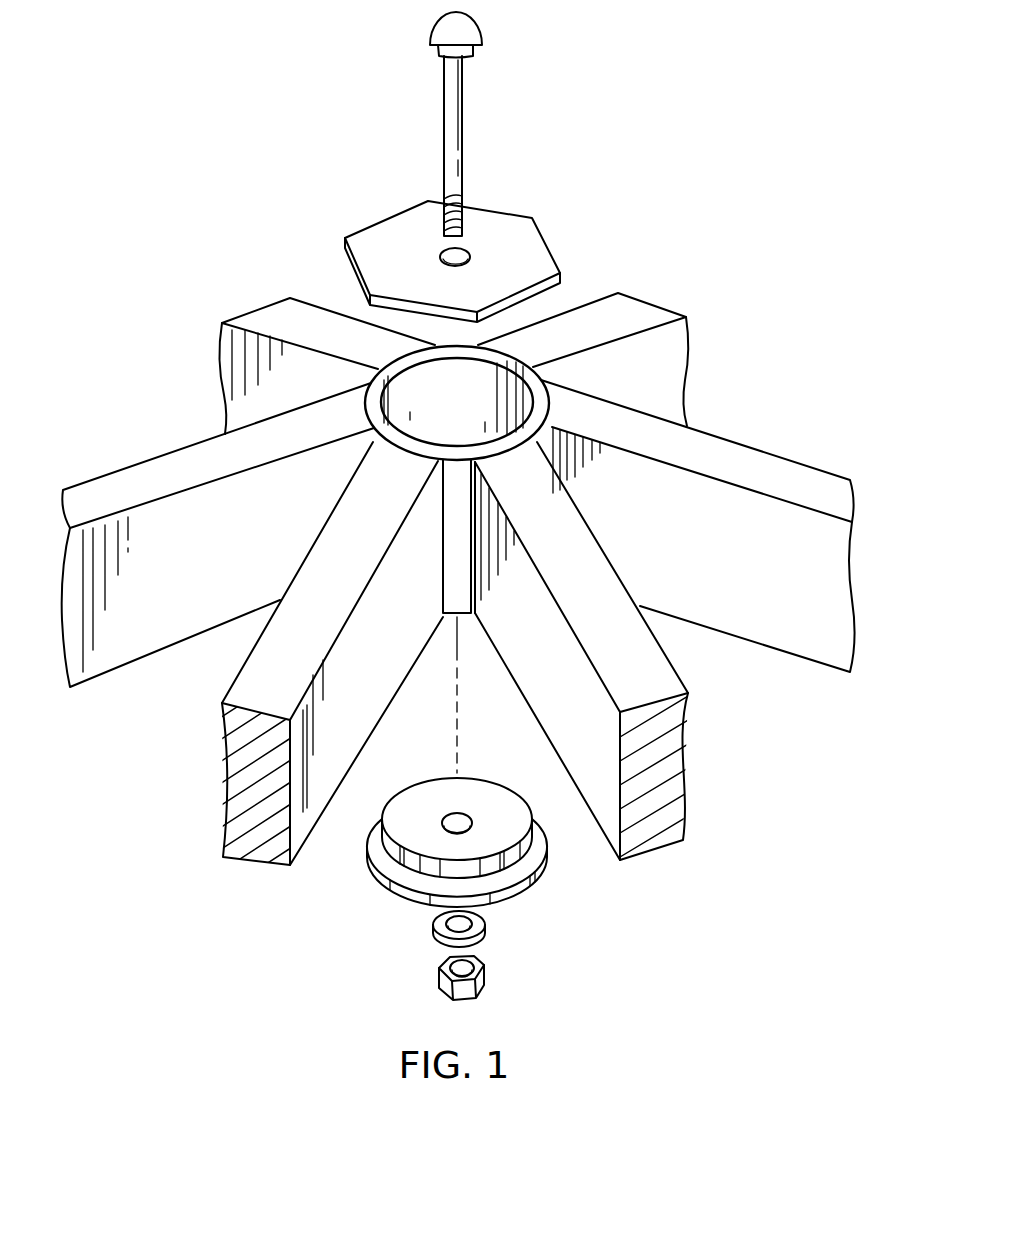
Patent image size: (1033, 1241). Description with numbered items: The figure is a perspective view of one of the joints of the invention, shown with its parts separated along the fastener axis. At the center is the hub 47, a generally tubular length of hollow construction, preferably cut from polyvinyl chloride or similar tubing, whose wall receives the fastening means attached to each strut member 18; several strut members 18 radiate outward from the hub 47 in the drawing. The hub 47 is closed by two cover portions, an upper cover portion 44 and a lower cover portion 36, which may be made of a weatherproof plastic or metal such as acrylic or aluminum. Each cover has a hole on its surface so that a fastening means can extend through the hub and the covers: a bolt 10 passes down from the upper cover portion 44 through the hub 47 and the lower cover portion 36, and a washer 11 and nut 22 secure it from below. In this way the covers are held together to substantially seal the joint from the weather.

The bolt 10 is at (482, 30).
The cover portion 44 is at (535, 218).
The hub 47 is at (432, 385).
The strut member 18 is at (730, 453).
The cover portion 36 is at (538, 875).
The washer 11 is at (433, 926).
The nut 22 is at (485, 971).